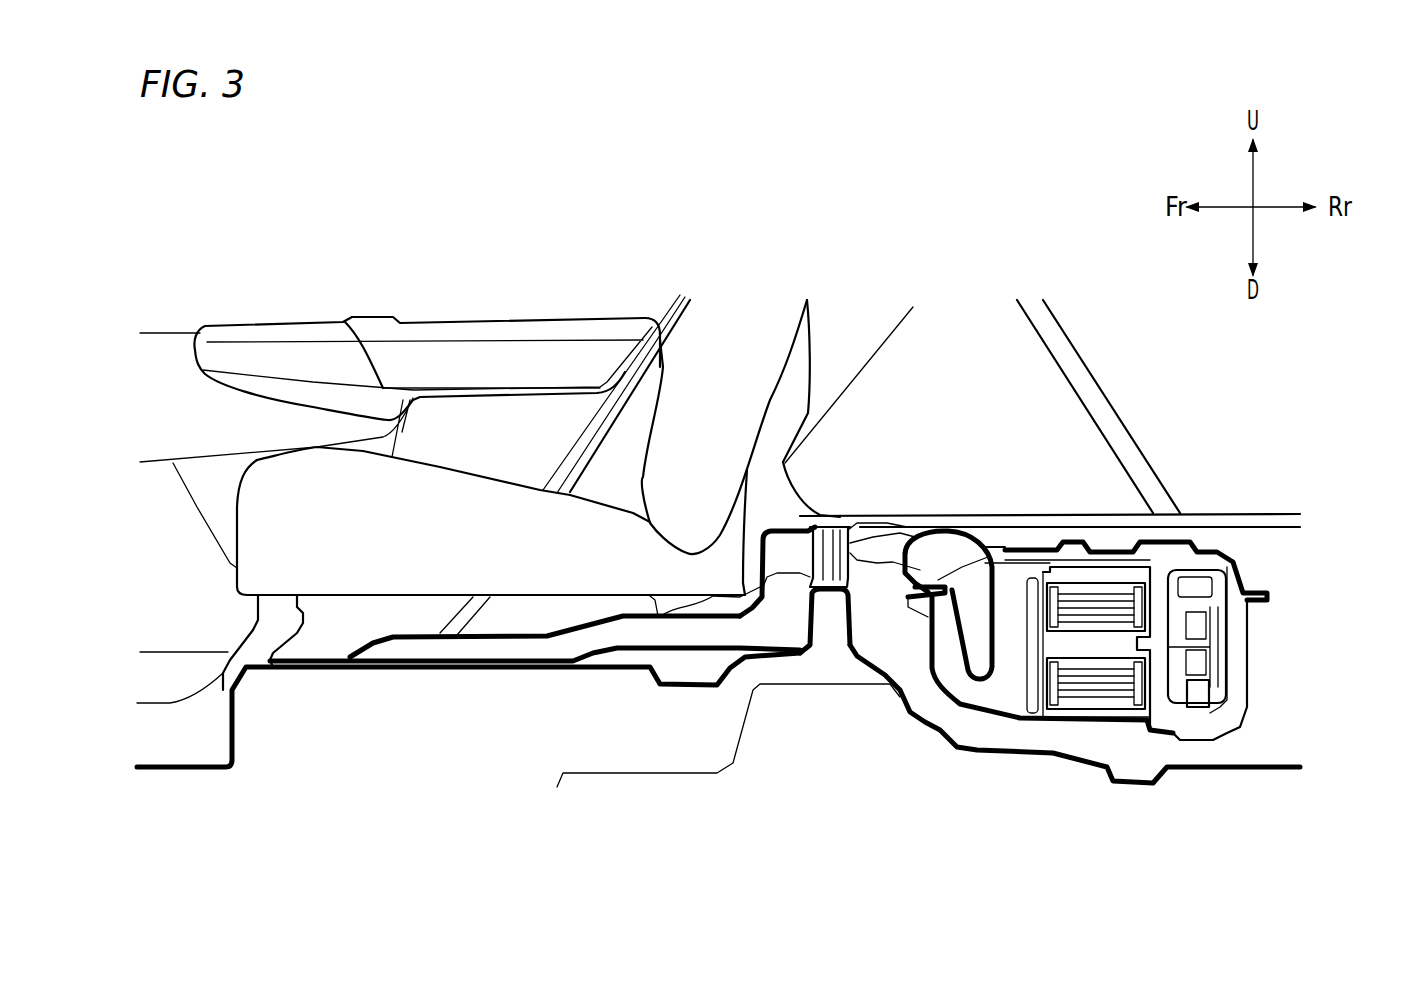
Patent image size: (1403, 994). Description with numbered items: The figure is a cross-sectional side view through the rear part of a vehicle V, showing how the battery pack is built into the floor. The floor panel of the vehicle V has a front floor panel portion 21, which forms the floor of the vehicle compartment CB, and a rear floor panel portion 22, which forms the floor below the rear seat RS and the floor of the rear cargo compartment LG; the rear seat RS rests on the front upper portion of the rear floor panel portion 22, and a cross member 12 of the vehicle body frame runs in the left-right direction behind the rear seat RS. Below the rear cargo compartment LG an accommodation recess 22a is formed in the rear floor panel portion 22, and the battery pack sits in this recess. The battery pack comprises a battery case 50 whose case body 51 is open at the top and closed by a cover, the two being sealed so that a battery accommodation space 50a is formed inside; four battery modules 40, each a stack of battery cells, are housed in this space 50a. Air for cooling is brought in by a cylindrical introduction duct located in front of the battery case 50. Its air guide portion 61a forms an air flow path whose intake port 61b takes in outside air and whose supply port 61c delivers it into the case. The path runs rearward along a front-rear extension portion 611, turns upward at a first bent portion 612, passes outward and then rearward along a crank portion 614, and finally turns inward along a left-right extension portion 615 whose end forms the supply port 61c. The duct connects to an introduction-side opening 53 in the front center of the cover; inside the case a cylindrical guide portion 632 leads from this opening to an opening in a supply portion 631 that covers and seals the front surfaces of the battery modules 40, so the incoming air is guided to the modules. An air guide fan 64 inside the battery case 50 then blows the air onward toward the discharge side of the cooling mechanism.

The cross member 12 is at (837, 600).
The front floor panel portion 21 is at (297, 675).
The rear floor panel portion 22 is at (1257, 768).
The accommodation recess 22a is at (928, 696).
The battery module 40 is at (1090, 688).
The battery case 50 is at (1096, 648).
The battery accommodation space 50a is at (997, 706).
The case body 51 is at (1250, 695).
The introduction-side opening 53 is at (1257, 513).
The air guide portion 61a is at (450, 637).
The intake port 61b is at (377, 630).
The supply port 61c is at (1002, 545).
The front-rear extension portion 611 is at (563, 648).
The first bent portion 612 is at (773, 588).
The crank portion 614 is at (843, 513).
The left-right extension portion 615 is at (938, 560).
The supply portion 631 is at (1053, 700).
The cylindrical guide portion 632 is at (970, 650).
The air guide fan 64 is at (1207, 682).
The vehicle V is at (258, 272).
The vehicle compartment CB is at (459, 340).
The rear seat RS is at (725, 380).
The rear cargo compartment LG is at (1052, 400).